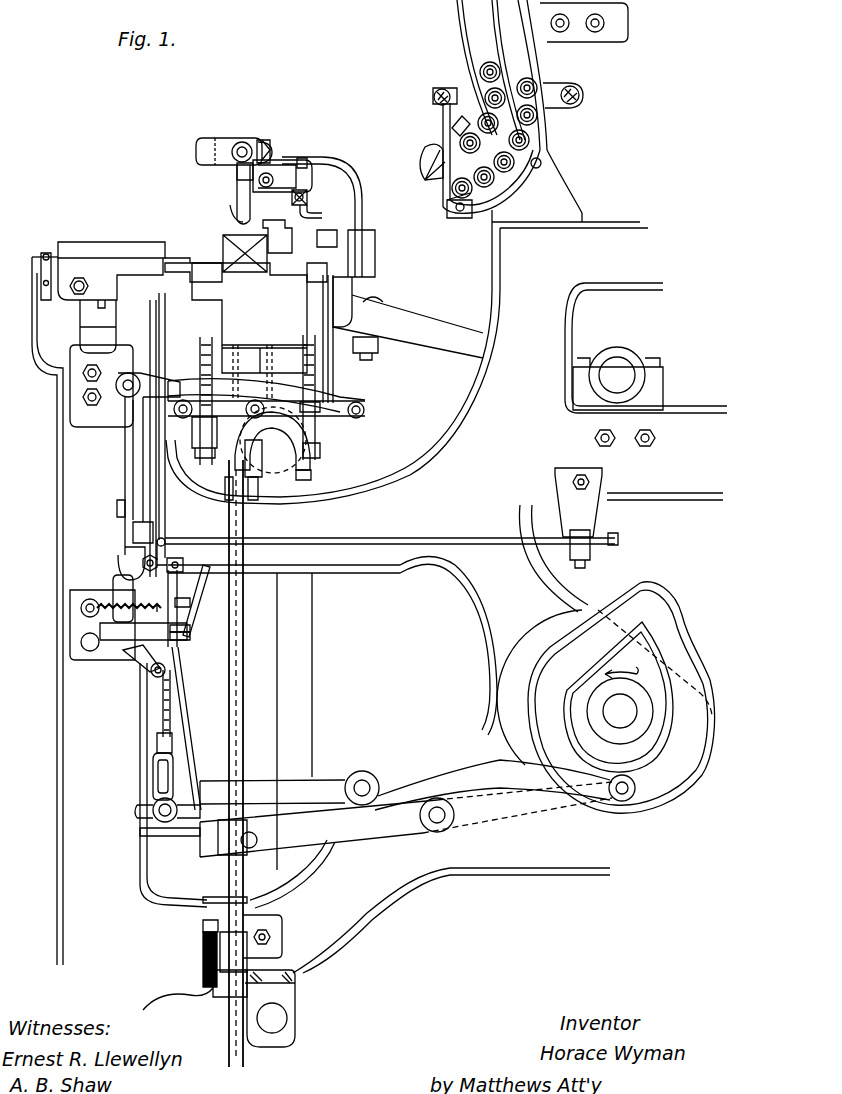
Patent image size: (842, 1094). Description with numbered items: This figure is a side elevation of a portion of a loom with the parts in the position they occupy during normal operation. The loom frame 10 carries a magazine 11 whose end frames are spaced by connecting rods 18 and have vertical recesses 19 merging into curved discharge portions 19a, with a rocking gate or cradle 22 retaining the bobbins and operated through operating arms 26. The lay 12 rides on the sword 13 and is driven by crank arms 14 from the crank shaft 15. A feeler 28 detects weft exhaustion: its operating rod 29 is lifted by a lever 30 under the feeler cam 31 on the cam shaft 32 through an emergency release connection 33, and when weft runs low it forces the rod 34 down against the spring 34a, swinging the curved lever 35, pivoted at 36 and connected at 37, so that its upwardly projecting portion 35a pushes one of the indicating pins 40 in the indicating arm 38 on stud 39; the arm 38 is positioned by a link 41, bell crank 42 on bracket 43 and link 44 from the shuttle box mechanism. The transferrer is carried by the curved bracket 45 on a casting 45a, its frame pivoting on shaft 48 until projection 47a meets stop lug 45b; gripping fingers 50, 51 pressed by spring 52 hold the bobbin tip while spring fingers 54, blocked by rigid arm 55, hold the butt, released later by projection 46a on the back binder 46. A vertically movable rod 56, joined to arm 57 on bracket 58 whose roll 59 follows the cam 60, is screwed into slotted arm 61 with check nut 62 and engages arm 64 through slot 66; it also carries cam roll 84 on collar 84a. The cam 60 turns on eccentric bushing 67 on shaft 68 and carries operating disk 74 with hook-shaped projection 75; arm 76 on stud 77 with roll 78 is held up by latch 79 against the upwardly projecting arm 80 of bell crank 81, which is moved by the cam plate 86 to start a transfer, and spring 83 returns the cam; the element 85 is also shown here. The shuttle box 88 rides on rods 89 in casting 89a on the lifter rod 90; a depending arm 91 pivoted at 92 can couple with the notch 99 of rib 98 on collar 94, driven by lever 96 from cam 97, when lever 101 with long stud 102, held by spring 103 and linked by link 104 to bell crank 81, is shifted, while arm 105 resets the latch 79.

The loom frame 10 is at (56, 493).
The magazine 11 is at (570, 38).
The lay 12 is at (249, 318).
The sword 13 is at (305, 625).
The crank arms 14 is at (422, 322).
The crank shaft 15 is at (622, 372).
The connecting rods 18 is at (440, 88).
The recesses 19 is at (485, 12).
The curved discharge portions 19a is at (450, 200).
The rocking gate or cradle 22 is at (452, 127).
The operating arms 26 is at (440, 148).
The feeler 28 is at (216, 250).
The operating rod 29 is at (160, 710).
The lever 30 is at (412, 762).
The feeler cam 31 is at (555, 622).
The cam shaft 32 is at (620, 711).
The emergency release connection 33 is at (152, 770).
The rod 34 is at (194, 580).
The spring 34a is at (190, 603).
The curved lever 35 is at (180, 655).
The upwardly projecting portion 35a is at (145, 578).
The pivot 36 is at (191, 638).
The pivotal connection 37 is at (191, 629).
The indicating arm 38 is at (167, 548).
The stud 39 is at (152, 673).
The indicating pins 40 is at (183, 562).
The link 41 is at (396, 540).
The bell crank 42 is at (592, 552).
The bracket 43 is at (596, 510).
The link 44 is at (620, 539).
The curved bracket 45 is at (203, 155).
The casting 45a is at (352, 262).
The stop lug 45b is at (265, 140).
The back binder 46 is at (280, 243).
The projection 46a is at (285, 210).
The projection 47a is at (258, 148).
The shaft 48 is at (233, 148).
The gripping finger 50 is at (243, 215).
The gripping finger 51 is at (244, 245).
The spring 52 is at (240, 172).
The spring fingers 54 is at (236, 210).
The rigid arm 55 is at (265, 140).
The vertically movable rod 56 is at (335, 352).
The arm 57 is at (318, 413).
The bracket 58 is at (245, 372).
The roll 59 is at (283, 372).
The cam 60 is at (330, 445).
The slotted arm 61 is at (272, 168).
The check nut 62 is at (303, 162).
The arm 64 is at (277, 158).
The slot 66 is at (270, 187).
The eccentric bushing 67 is at (258, 462).
The shaft 68 is at (272, 468).
The operating disk 74 is at (312, 470).
The hook-shaped projection 75 is at (300, 423).
The arm 76 is at (348, 397).
The stud 77 is at (122, 395).
The roll 78 is at (365, 410).
The latch 79 is at (127, 445).
The upwardly projecting arm 80 is at (117, 510).
The bell crank 81 is at (125, 636).
The spring 83 is at (212, 348).
The cam roll 84 is at (307, 198).
The collar 84a is at (310, 180).
The block 85 is at (133, 532).
The cam plate 86 is at (165, 538).
The shuttle box 88 is at (210, 278).
The rods 89 is at (210, 372).
The casting 89a is at (311, 478).
The lifter rod 90 is at (236, 583).
The depending arm 91 is at (218, 866).
The pivot 92 is at (207, 838).
The collar 94 is at (272, 948).
The lever 96 is at (355, 838).
The cam 97 is at (668, 778).
The rib 98 is at (222, 998).
The notch 99 is at (215, 950).
The lever 101 is at (205, 925).
The long stud 102 is at (250, 900).
The spring 103 is at (202, 945).
The link 104 is at (180, 718).
The arm 105 is at (235, 480).